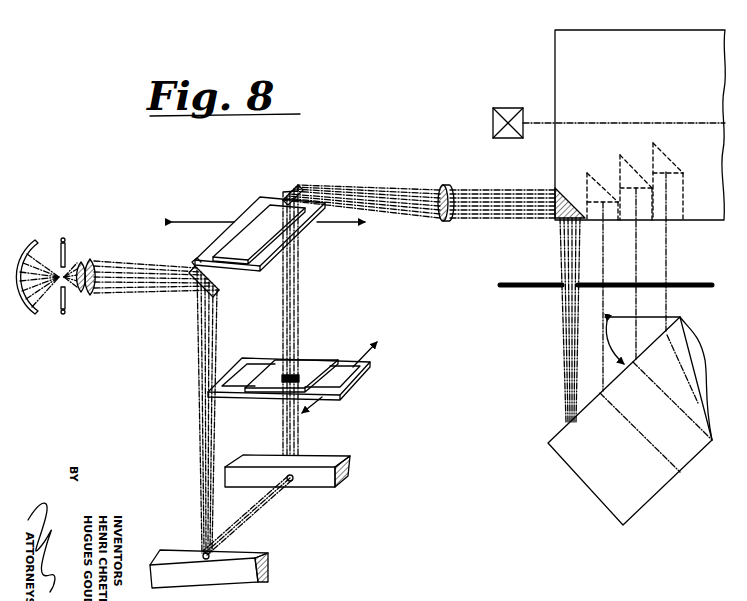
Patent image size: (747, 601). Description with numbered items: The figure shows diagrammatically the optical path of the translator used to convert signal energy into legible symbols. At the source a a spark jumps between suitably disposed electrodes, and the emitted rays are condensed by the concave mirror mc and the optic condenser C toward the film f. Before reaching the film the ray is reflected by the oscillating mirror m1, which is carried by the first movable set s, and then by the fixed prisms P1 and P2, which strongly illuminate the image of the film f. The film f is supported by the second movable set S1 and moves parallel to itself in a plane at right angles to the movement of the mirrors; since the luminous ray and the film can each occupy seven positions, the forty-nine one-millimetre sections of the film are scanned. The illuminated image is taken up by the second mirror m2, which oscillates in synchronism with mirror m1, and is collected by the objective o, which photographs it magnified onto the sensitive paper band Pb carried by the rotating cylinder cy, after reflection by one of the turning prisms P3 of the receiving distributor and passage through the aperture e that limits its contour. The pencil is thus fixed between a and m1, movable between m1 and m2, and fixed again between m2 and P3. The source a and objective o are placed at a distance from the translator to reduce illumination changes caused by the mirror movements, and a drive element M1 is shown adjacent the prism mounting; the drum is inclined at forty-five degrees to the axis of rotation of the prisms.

The concave mirror mc is at (37, 268).
The spark source a is at (74, 280).
The optic condenser C is at (79, 267).
The oscillating mirror m1 is at (216, 281).
The second mirror m2 is at (299, 187).
The first movable set s is at (268, 234).
The objective o is at (446, 192).
The turning prisms P3 is at (570, 198).
The motor M1 is at (601, 110).
The aperture e is at (558, 282).
The sensitive paper band Pb is at (630, 421).
The rotating cylinder cy is at (612, 508).
The second movable set S1 is at (292, 377).
The photographic film f is at (291, 365).
The fixed prism P2 is at (295, 473).
The fixed prism P1 is at (223, 569).